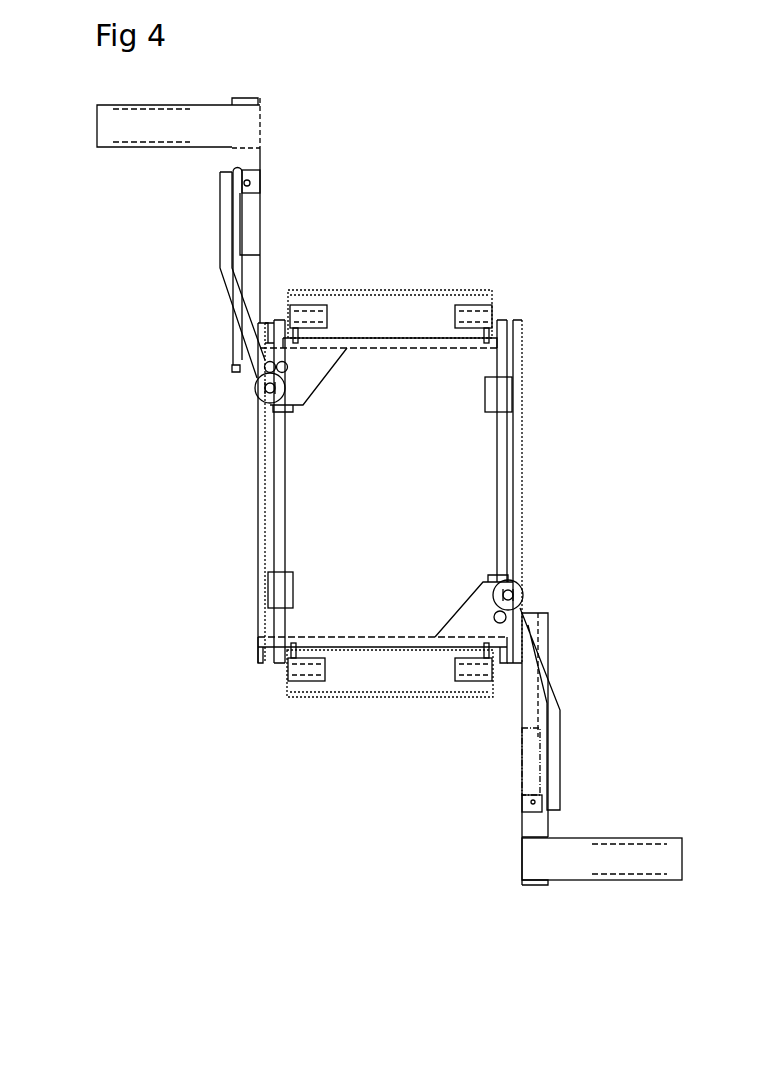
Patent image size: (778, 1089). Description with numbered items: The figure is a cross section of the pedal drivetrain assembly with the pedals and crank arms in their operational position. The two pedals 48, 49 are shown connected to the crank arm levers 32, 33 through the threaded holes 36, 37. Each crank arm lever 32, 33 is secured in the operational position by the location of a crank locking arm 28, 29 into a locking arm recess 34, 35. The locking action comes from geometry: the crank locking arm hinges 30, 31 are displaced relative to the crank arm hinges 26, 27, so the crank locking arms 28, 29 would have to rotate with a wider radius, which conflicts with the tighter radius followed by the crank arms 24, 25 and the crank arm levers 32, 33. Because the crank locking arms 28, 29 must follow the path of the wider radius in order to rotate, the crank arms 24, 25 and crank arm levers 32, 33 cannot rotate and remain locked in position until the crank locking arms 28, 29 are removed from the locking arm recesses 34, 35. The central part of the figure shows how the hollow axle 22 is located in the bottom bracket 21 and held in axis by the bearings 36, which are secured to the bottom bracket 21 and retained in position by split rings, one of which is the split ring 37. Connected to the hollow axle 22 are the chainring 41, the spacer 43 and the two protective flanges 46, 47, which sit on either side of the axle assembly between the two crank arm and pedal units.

The bottom bracket 21 is at (370, 288).
The hollow axle 22 is at (393, 338).
The crank arm 24 is at (247, 305).
The crank arm 25 is at (532, 710).
The crank arm hinge 26 is at (262, 365).
The crank arm hinge 27 is at (507, 623).
The crank locking arm 28 is at (218, 252).
The crank locking arm 29 is at (562, 710).
The crank locking arm hinge 30 is at (255, 390).
The crank locking arm hinge 31 is at (524, 593).
The crank arm lever 32 is at (257, 178).
The crank arm lever 33 is at (548, 835).
The locking arm recess 34 is at (243, 170).
The locking arm recess 35 is at (522, 807).
The bearings 36 is at (265, 102).
The split ring 37 is at (522, 842).
The chainring 41 is at (280, 447).
The spacer 43 is at (503, 472).
The protective flange 46 is at (258, 500).
The protective flange 47 is at (522, 522).
The pedal 48 is at (150, 128).
The pedal 49 is at (593, 862).